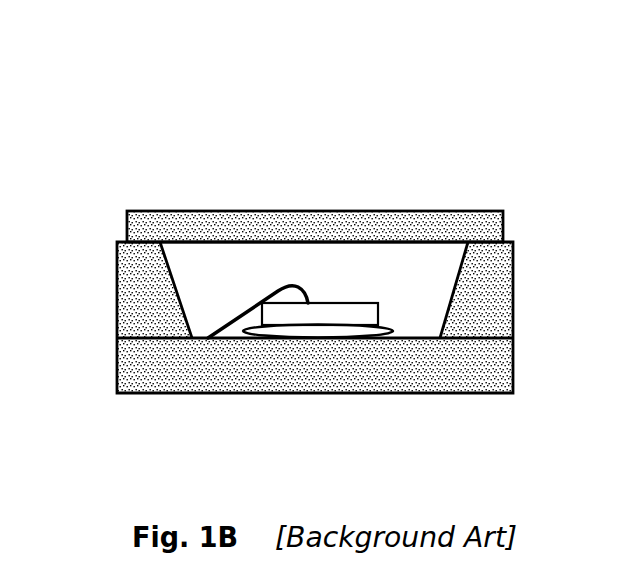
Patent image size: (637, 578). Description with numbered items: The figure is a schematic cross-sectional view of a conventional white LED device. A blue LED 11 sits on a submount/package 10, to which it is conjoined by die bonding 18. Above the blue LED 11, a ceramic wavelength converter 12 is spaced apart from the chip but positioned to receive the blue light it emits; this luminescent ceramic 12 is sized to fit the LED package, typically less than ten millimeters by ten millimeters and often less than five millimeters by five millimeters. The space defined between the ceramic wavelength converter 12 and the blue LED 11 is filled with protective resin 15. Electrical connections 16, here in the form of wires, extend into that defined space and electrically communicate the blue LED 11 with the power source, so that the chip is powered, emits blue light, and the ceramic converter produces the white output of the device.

The submount/package 10 is at (203, 372).
The blue LED 11 is at (332, 312).
The ceramic wavelength converter 12 is at (335, 222).
The protective resin 15 is at (238, 273).
The electrical connections 16 is at (237, 318).
The die bonding 18 is at (327, 338).